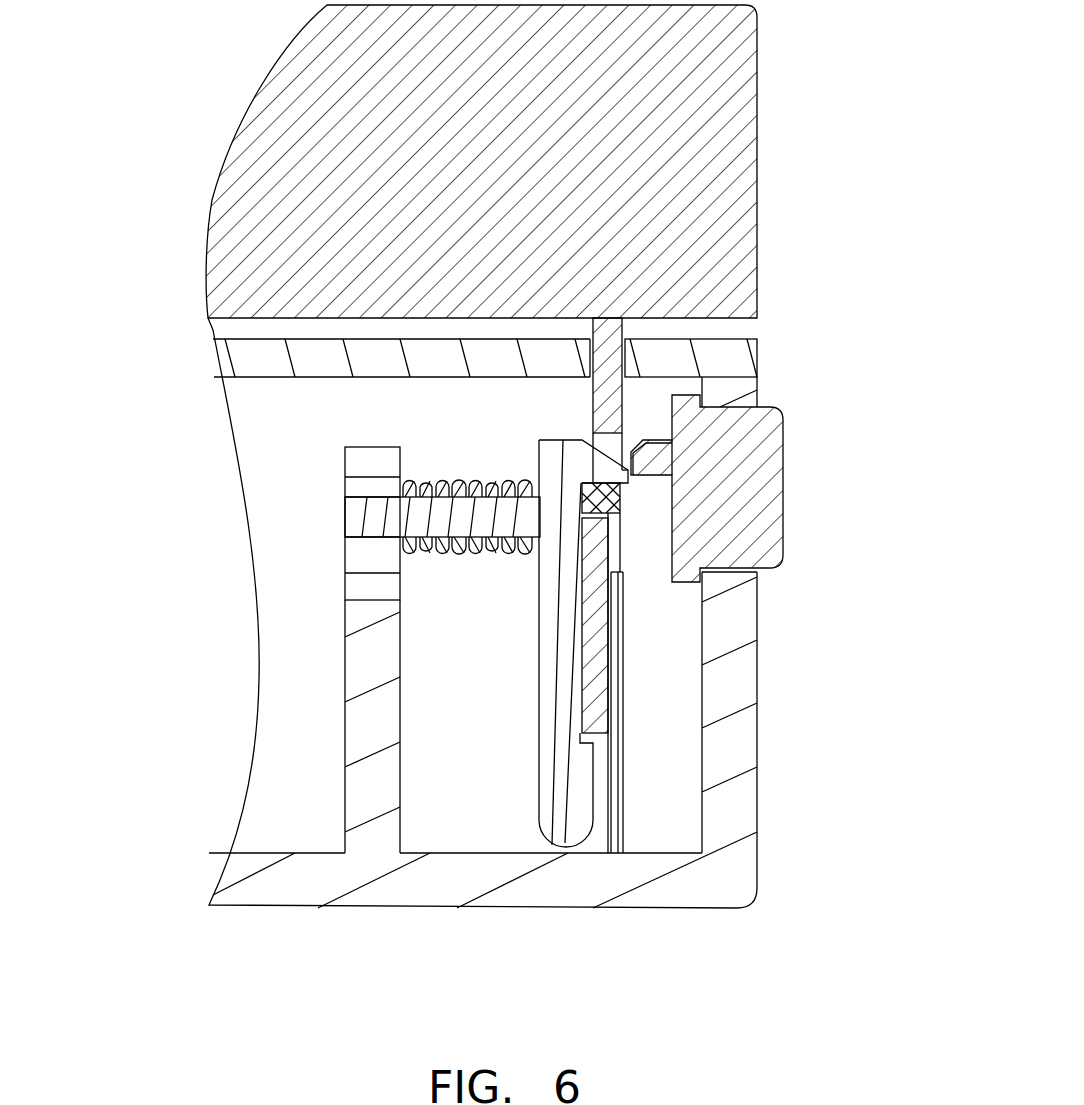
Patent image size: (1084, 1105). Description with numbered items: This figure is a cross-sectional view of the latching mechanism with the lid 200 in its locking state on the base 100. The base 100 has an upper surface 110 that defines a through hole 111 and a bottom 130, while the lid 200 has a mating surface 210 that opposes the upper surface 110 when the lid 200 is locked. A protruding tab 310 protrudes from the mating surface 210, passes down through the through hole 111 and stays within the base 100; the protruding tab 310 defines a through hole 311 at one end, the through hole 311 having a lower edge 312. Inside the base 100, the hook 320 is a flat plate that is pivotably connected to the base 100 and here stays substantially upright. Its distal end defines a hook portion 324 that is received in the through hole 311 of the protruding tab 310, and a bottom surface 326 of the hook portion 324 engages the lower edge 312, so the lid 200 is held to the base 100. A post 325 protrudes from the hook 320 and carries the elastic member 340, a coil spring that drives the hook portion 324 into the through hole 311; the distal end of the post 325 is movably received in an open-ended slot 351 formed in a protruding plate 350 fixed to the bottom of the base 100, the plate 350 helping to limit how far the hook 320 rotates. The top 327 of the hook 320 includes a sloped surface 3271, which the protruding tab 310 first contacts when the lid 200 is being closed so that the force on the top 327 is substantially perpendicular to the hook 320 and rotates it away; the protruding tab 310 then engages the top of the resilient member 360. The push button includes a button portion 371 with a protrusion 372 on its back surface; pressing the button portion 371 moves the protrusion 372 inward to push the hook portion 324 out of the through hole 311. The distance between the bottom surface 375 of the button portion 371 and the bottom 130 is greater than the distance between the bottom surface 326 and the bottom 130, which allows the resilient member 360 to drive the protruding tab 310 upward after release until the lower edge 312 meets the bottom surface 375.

The base 100 is at (290, 880).
The upper surface 110 is at (706, 317).
The through hole 111 is at (745, 293).
The bottom 130 is at (480, 858).
The lid 200 is at (700, 240).
The mating surface 210 is at (685, 210).
The protruding tab 310 is at (607, 408).
The through hole 311 is at (755, 421).
The lower edge 312 is at (757, 582).
The hook 320 is at (548, 604).
The hook portion 324 is at (385, 439).
The post 325 is at (373, 514).
The bottom surface 326 is at (723, 561).
The top 327 is at (267, 362).
The sloped surface 3271 is at (368, 339).
The elastic member 340 is at (420, 552).
The protruding plate 350 is at (372, 710).
The open-ended slot 351 is at (363, 485).
The resilient member 360 is at (720, 683).
The button portion 371 is at (730, 498).
The protrusion 372 is at (642, 461).
The bottom surface 375 is at (749, 500).